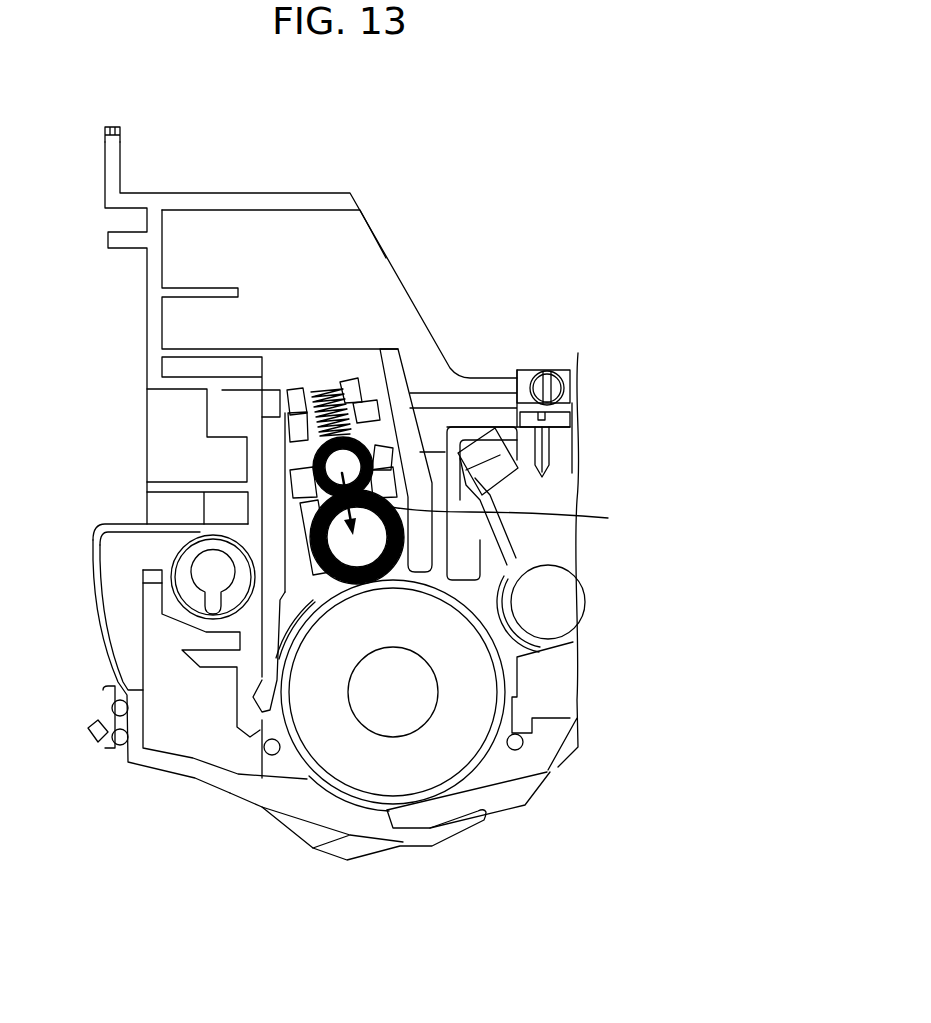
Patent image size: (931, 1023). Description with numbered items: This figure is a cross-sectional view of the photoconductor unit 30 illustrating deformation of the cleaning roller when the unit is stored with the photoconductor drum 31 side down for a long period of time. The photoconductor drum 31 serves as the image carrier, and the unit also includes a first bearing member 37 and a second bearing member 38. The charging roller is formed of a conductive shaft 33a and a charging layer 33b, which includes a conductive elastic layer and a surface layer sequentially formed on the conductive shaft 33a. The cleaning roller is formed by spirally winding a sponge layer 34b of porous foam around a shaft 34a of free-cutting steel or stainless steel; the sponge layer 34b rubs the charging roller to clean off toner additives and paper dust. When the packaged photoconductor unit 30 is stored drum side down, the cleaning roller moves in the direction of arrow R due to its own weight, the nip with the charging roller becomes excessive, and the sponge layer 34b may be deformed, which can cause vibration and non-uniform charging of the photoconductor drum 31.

The photoconductor unit 30 is at (107, 482).
The photoconductor drum 31 is at (313, 729).
The conductive shaft 33a is at (368, 574).
The charging layer 33b is at (365, 570).
The shaft 34a is at (325, 393).
The sponge layer 34b is at (293, 485).
The first bearing member 37 is at (407, 487).
The second bearing member 38 is at (413, 578).